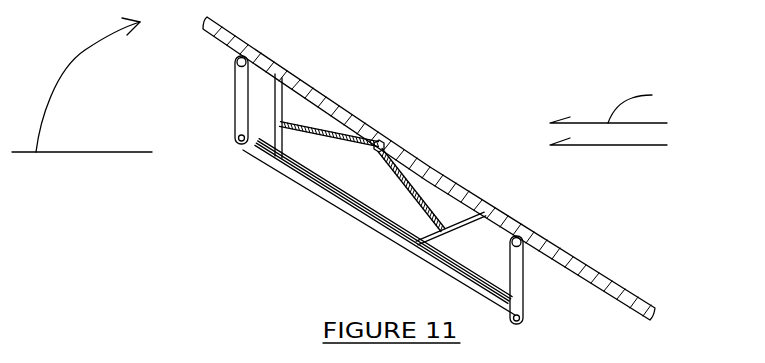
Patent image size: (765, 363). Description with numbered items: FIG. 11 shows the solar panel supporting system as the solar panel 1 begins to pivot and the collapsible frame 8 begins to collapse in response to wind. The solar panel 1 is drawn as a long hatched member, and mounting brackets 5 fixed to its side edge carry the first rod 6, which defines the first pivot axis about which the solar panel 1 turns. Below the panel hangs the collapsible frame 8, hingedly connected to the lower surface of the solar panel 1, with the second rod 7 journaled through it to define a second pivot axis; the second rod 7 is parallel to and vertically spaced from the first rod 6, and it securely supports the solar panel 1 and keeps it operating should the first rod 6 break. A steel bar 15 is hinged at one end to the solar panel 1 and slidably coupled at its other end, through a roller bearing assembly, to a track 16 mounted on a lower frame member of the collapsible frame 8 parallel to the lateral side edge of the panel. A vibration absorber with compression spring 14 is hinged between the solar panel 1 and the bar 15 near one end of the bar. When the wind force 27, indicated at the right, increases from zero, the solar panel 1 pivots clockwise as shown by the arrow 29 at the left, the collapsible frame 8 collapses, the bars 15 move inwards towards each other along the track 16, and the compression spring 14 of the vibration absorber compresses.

The solar panel 1 is at (281, 63).
The mounting brackets 5 is at (381, 138).
The first rod 6 is at (381, 162).
The second rod 7 is at (380, 235).
The collapsible frame 8 is at (235, 100).
The vibration absorber with compression spring 14 is at (347, 141).
The steel bar 15 is at (276, 99).
The track 16 is at (316, 187).
The wind force 27 is at (609, 115).
The arrow 29 is at (66, 74).